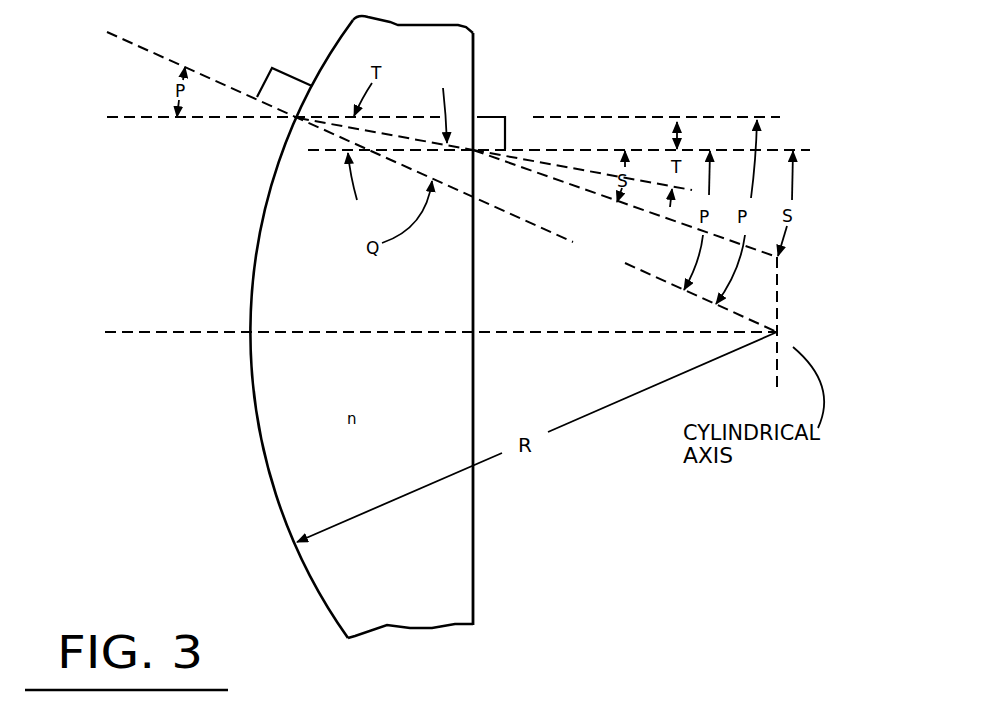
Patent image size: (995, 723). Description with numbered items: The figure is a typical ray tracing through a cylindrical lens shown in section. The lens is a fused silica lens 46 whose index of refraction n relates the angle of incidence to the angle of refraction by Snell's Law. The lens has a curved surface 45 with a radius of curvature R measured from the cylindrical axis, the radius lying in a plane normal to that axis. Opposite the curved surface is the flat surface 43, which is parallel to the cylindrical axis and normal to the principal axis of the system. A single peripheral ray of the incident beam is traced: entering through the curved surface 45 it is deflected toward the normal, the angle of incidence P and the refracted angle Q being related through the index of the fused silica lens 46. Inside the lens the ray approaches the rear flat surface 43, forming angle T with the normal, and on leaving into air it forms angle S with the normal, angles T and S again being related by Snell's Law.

The flat surface 43 is at (478, 518).
The curved surface 45 is at (303, 567).
The fused silica lens 46 is at (400, 581).